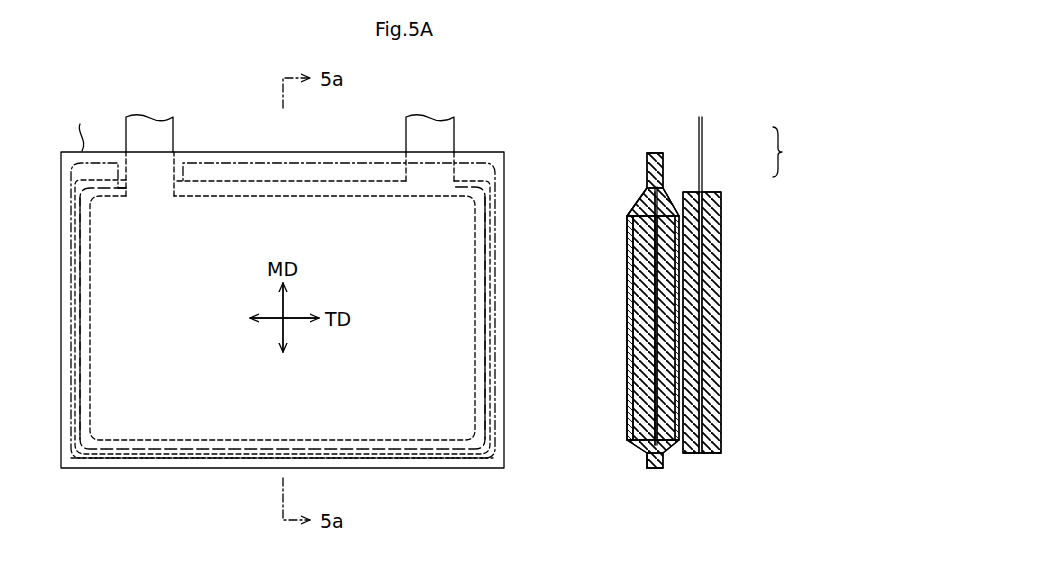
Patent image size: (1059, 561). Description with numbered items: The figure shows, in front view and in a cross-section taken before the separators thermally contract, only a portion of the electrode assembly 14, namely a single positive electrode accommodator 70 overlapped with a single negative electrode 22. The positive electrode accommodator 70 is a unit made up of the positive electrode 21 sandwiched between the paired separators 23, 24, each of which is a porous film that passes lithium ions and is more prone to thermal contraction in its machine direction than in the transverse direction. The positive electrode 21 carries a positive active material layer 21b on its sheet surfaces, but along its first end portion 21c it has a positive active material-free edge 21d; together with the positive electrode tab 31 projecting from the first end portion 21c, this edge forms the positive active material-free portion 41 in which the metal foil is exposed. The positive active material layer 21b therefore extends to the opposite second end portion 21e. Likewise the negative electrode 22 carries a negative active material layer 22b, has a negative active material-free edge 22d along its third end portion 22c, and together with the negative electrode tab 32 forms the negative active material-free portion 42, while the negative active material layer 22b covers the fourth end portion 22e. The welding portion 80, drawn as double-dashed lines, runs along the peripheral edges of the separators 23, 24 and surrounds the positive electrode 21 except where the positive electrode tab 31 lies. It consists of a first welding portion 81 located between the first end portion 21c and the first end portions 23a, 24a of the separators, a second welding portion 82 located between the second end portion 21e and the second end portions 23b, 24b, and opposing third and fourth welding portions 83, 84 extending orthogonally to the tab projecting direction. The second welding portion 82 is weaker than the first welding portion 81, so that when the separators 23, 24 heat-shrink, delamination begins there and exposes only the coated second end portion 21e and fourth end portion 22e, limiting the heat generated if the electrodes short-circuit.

The electrode assembly 14 is at (483, 83).
The positive electrode accommodator 70 is at (494, 144).
The positive electrode tab 31 is at (149, 126).
The negative electrode tab 32 is at (437, 127).
The positive active material-free portion 41 is at (175, 127).
The negative active material-free portion 42 is at (458, 130).
The positive electrode 21 is at (413, 458).
The positive active material layer 21b is at (662, 375).
The first end portion 21c is at (254, 195).
The positive active material-free edge 21d is at (655, 212).
The second end portion 21e is at (370, 458).
The negative electrode 22 is at (448, 456).
The negative active material layer 22b is at (692, 358).
The third end portion 22c is at (306, 181).
The negative active material-free edge 22d is at (703, 187).
The fourth end portion 22e is at (310, 458).
The separator 23 is at (349, 152).
The first end portion of separator 23a is at (650, 152).
The second end portion of separator 23b is at (481, 468).
The separator 24 is at (632, 302).
The first end portion of separator 24a is at (660, 152).
The second end portion of separator 24b is at (647, 469).
The welding portion 80 is at (131, 460).
The first welding portion 81 is at (223, 162).
The second welding portion 82 is at (208, 460).
The third welding portion 83 is at (82, 366).
The fourth welding portion 84 is at (476, 353).